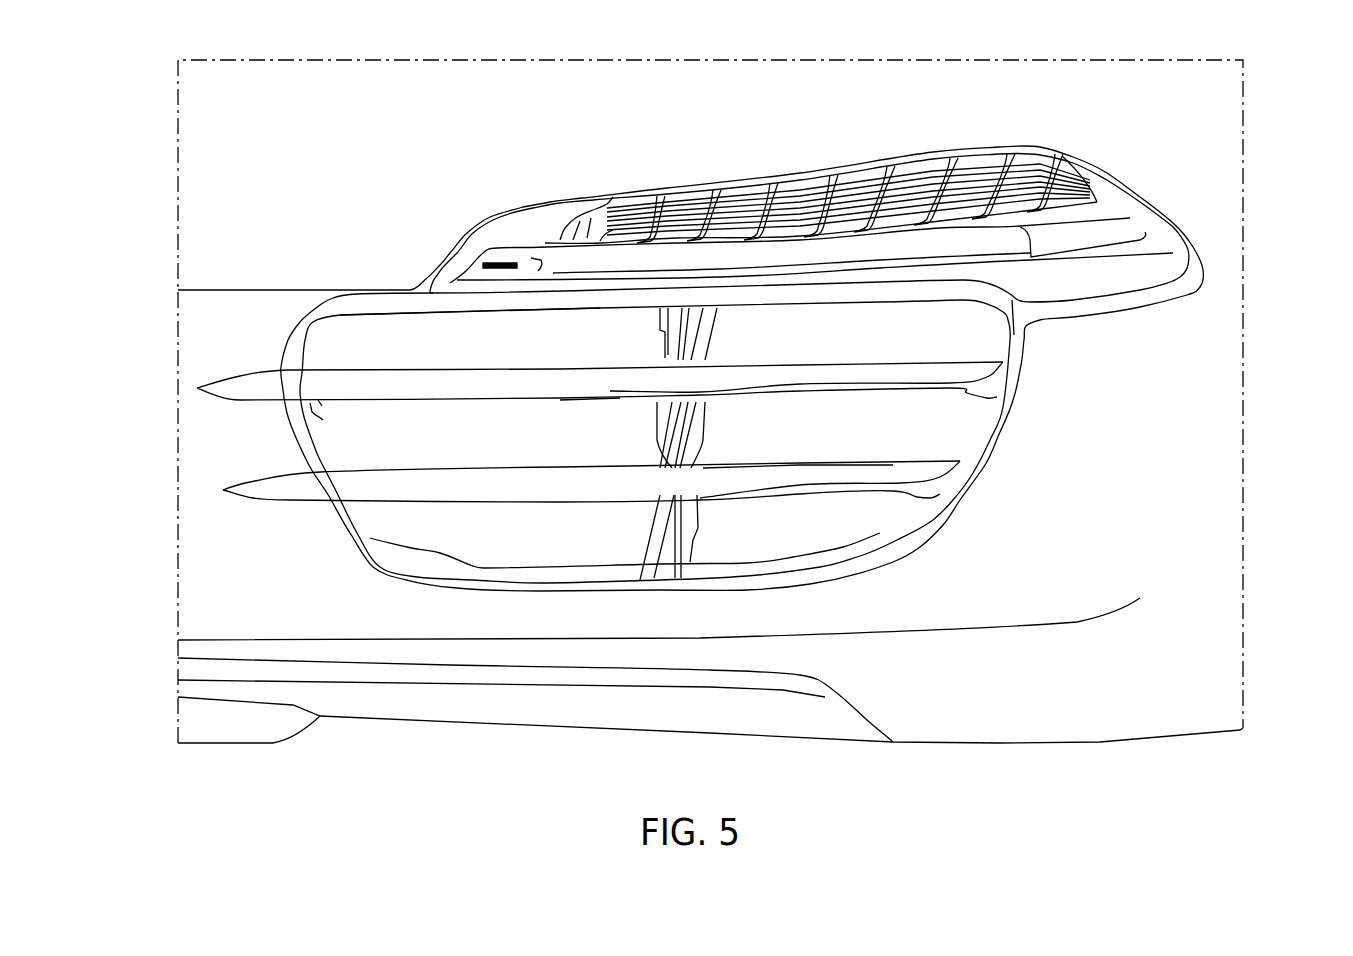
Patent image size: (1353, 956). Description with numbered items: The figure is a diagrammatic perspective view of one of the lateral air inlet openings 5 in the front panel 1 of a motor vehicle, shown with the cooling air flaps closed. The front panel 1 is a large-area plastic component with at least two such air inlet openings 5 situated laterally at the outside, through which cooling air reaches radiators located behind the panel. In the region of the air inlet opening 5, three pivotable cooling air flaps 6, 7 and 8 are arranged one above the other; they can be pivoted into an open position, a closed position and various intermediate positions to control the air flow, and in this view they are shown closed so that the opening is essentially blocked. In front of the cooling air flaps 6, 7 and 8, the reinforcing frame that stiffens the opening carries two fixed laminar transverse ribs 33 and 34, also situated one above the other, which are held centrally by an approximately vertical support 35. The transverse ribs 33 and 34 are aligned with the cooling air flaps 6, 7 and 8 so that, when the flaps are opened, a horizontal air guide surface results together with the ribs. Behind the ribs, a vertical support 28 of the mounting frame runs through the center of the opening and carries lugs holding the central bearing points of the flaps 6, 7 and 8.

The front panel 1 is at (1195, 185).
The air inlet opening 5 is at (918, 527).
The cooling air flap 6 is at (529, 350).
The cooling air flap 7 is at (531, 450).
The cooling air flap 8 is at (540, 548).
The vertical support 28 is at (687, 547).
The transverse rib 33 is at (263, 385).
The transverse rib 34 is at (290, 486).
The vertical support 35 is at (700, 357).